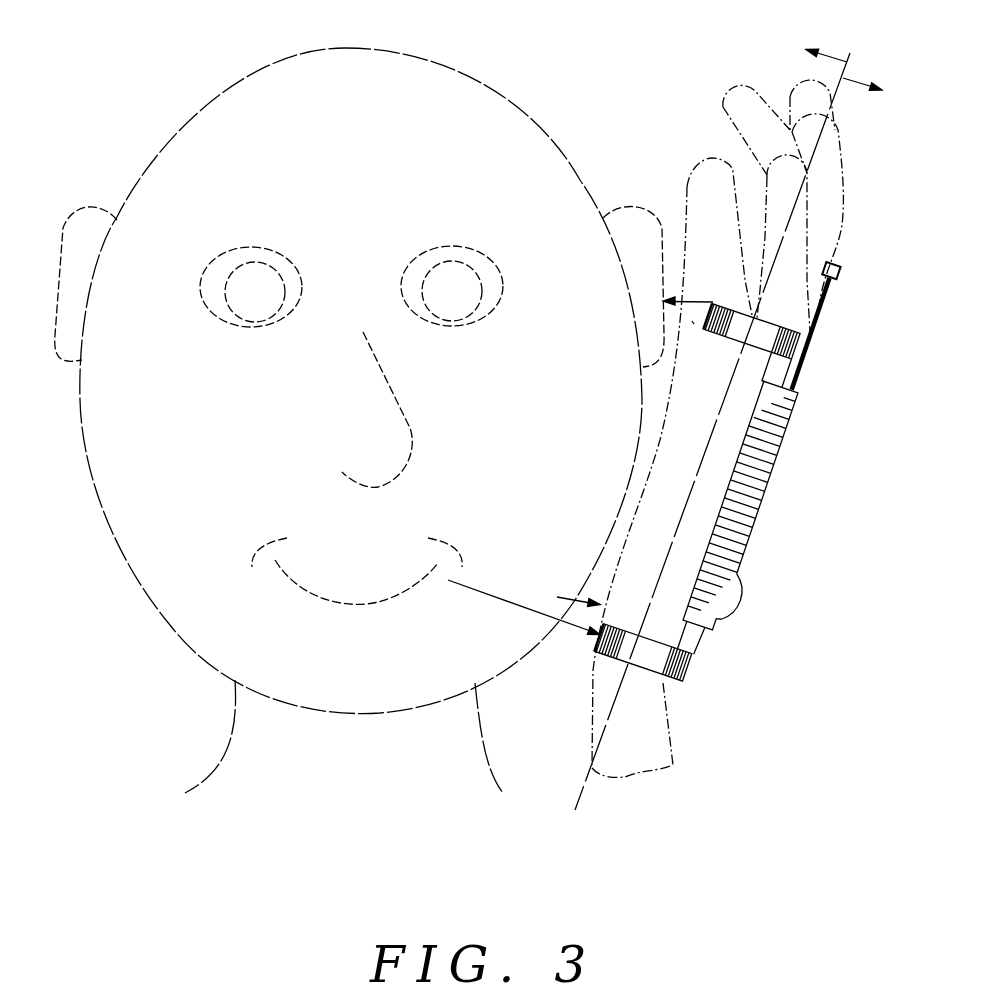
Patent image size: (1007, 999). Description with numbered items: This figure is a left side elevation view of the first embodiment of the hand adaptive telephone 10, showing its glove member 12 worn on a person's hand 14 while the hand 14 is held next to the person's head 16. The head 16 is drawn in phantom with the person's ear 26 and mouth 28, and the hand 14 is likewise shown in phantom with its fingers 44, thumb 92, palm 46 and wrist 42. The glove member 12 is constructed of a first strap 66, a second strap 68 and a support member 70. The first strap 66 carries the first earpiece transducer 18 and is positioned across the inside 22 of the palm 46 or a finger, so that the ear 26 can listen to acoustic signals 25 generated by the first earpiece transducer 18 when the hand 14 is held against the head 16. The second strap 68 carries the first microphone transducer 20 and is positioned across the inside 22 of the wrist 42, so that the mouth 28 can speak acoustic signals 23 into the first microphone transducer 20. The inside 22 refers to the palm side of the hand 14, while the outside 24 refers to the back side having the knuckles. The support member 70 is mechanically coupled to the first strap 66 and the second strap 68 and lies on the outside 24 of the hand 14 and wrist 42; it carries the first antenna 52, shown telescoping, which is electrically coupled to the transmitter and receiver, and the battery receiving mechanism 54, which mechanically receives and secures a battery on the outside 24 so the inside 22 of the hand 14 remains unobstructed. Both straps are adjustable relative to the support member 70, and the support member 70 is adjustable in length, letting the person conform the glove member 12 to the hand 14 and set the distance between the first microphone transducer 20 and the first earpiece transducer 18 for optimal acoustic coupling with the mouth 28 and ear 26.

The hand adaptive telephone 10 is at (683, 437).
The glove member 12 is at (716, 650).
The hand 14 is at (564, 595).
The head 16 is at (102, 517).
The first earpiece transducer 18 is at (698, 304).
The first microphone transducer 20 is at (596, 645).
The inside of the hand 22 is at (833, 54).
The acoustic signals 23 is at (488, 597).
The outside of the hand 24 is at (860, 80).
The acoustic signals 25 is at (693, 322).
The ear 26 is at (638, 222).
The mouth 28 is at (377, 603).
The wrist 42 is at (653, 741).
The fingers 44 is at (823, 165).
The palm 46 is at (663, 428).
The first antenna 52 is at (825, 319).
The battery receiving mechanism 54 is at (738, 610).
The first strap 66 is at (757, 340).
The second strap 68 is at (640, 660).
The support member 70 is at (768, 468).
The thumb 92 is at (710, 173).